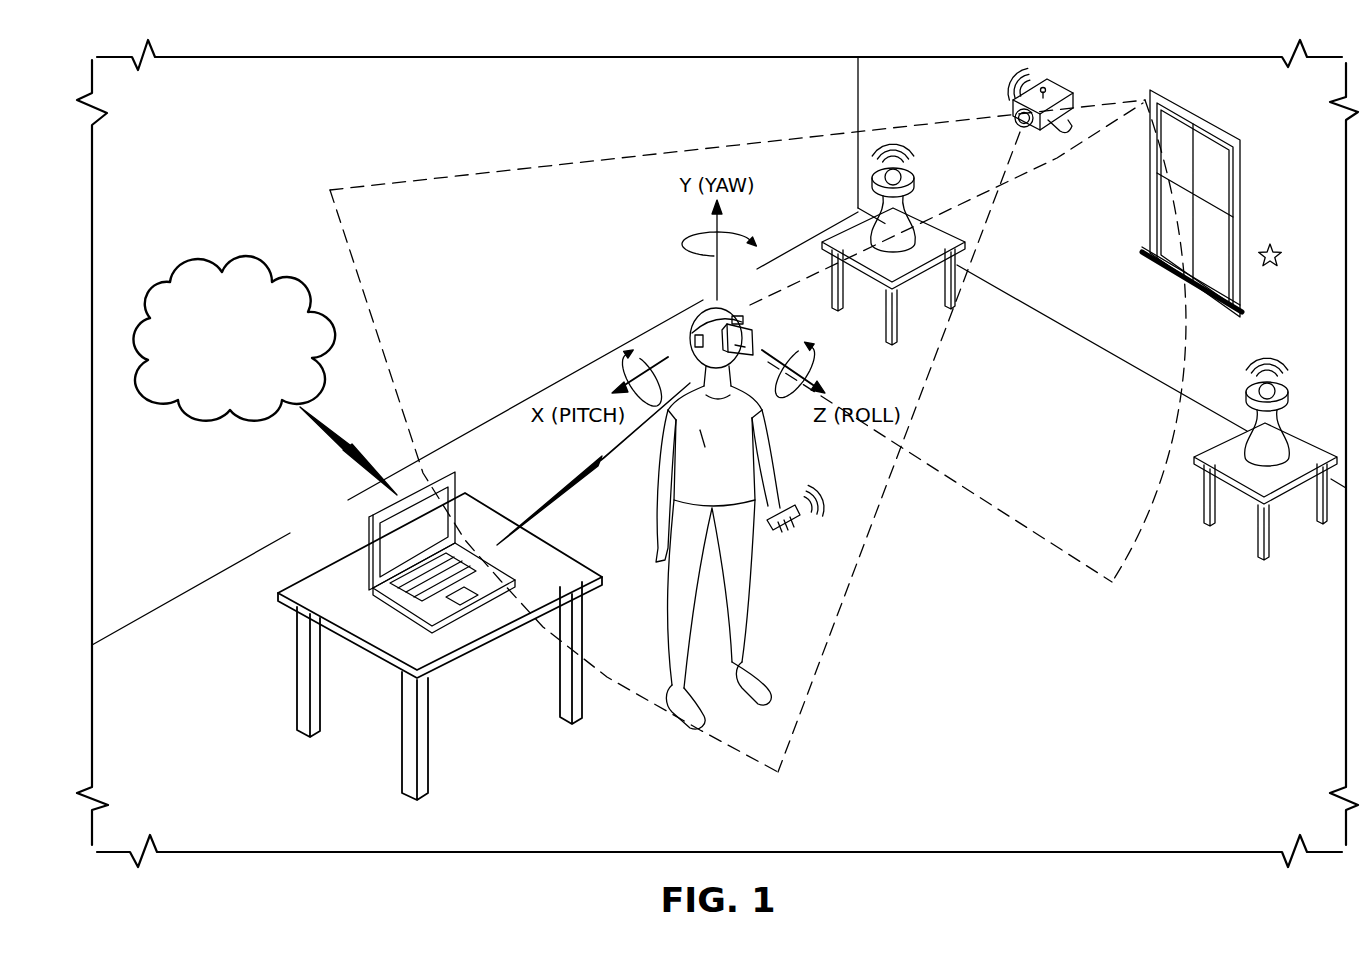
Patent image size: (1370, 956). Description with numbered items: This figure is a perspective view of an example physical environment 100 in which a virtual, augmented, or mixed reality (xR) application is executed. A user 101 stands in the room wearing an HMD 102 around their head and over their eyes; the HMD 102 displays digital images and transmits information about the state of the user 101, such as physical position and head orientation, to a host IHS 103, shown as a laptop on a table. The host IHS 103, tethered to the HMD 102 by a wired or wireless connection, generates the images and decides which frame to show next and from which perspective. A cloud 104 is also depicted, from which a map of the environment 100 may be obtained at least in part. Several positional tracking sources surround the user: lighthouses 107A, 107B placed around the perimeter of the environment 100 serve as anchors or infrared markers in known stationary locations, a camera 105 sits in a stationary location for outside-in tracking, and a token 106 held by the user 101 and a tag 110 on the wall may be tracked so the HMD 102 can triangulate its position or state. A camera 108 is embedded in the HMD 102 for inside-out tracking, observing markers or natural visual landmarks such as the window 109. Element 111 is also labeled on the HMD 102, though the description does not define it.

The physical environment 100 is at (555, 54).
The user 101 is at (749, 573).
The HMD 102 is at (697, 313).
The host IHS 103 is at (372, 536).
The cloud 104 is at (250, 377).
The camera 105 is at (1073, 94).
The token 106 is at (800, 520).
The lighthouse 107A is at (912, 186).
The lighthouse 107B is at (1284, 392).
The camera 108 is at (743, 322).
The window 109 is at (1239, 190).
The tag 110 is at (1282, 248).
The HMD camera 111 is at (696, 342).